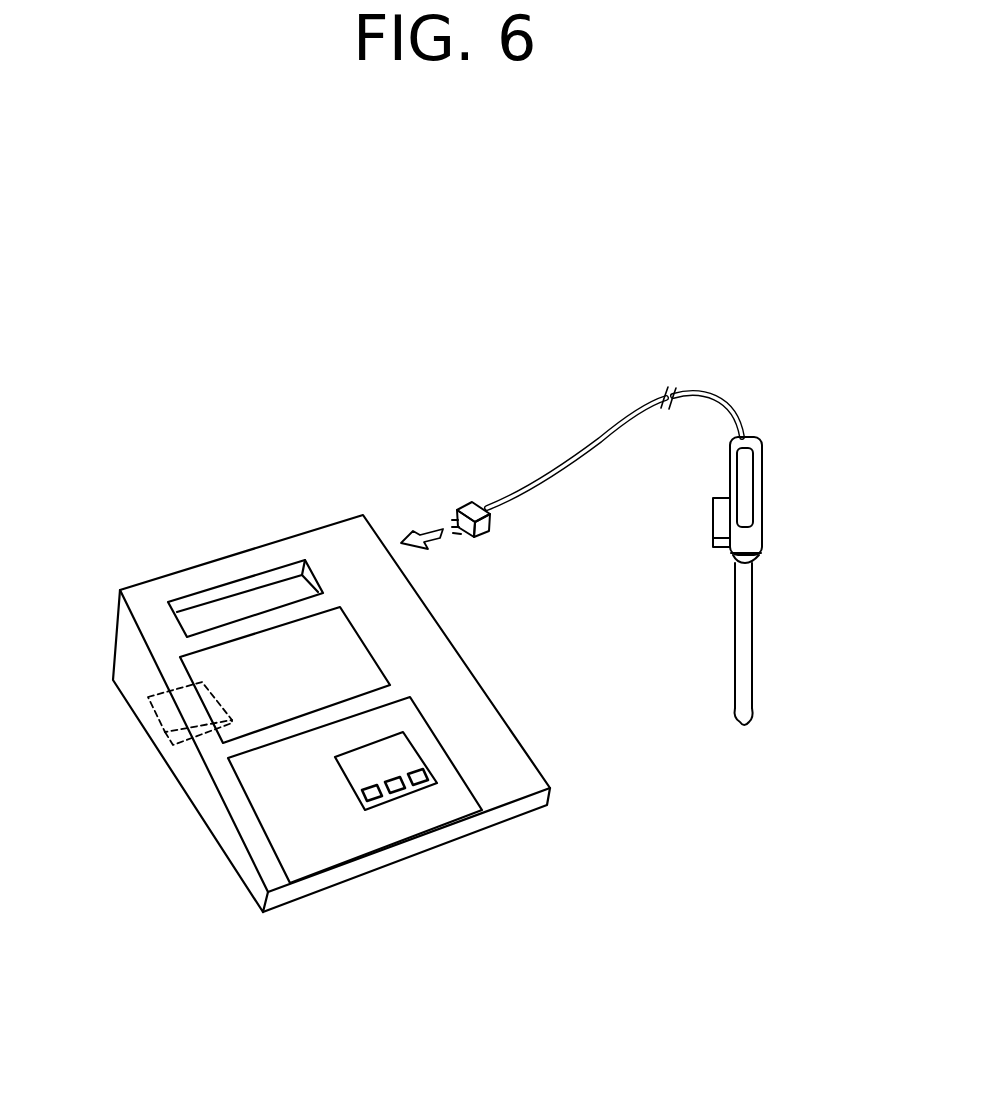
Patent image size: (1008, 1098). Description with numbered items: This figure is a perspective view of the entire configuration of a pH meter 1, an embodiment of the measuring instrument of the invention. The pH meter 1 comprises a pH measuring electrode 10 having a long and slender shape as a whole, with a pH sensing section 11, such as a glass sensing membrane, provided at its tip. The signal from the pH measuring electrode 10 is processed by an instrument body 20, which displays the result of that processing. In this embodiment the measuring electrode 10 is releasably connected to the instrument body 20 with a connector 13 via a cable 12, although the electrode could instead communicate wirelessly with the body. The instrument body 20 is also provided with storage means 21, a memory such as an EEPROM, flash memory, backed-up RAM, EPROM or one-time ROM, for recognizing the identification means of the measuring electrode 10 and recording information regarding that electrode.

The pH meter 1 is at (396, 392).
The pH measuring electrode 10 is at (790, 496).
The pH sensing section 11 is at (745, 727).
The cable 12 is at (613, 423).
The connector 13 is at (475, 502).
The instrument body 20 is at (228, 522).
The storage means 21 is at (162, 755).